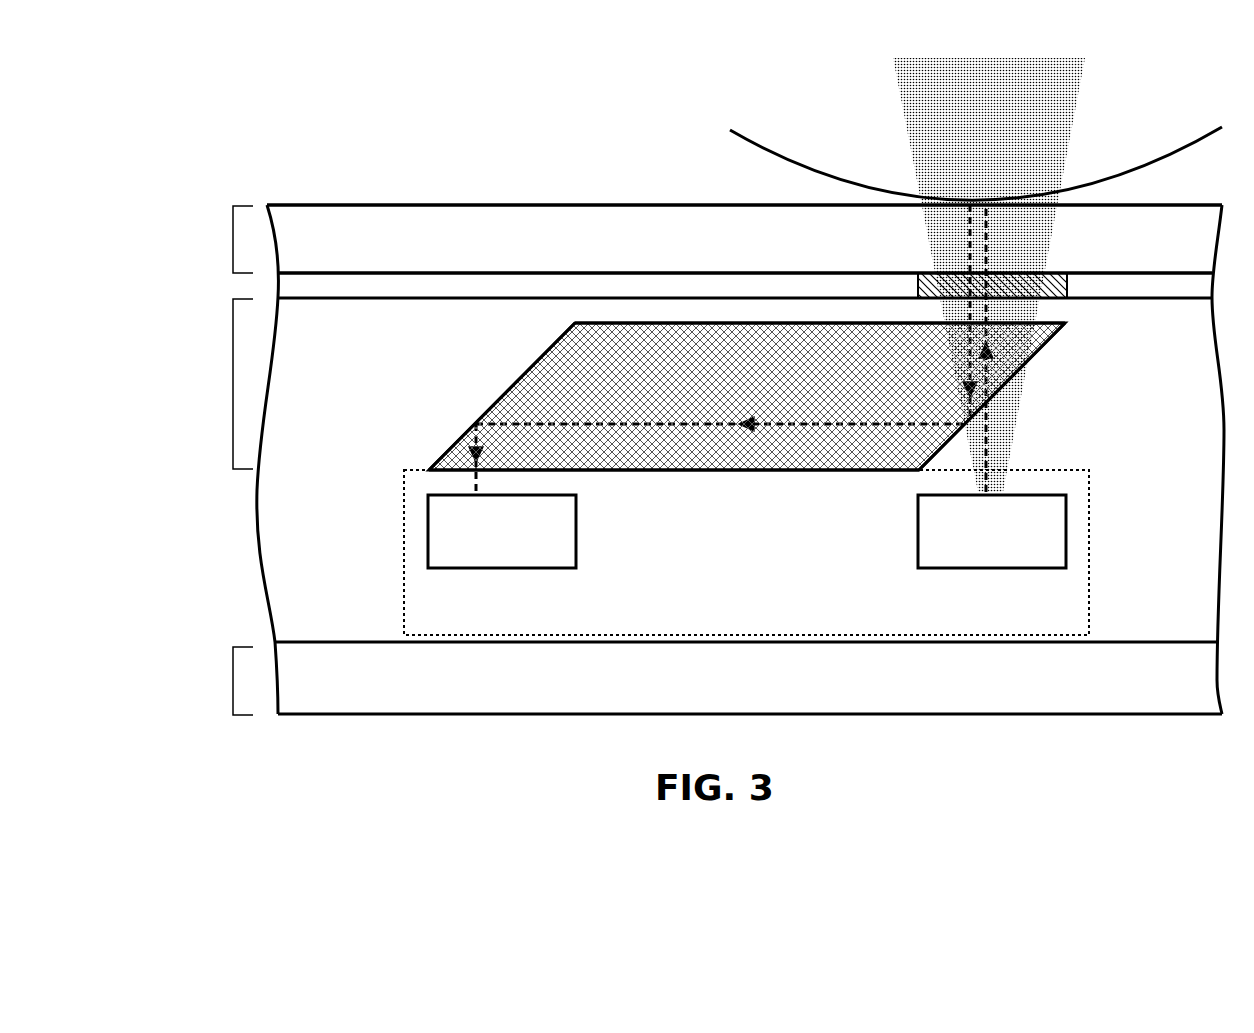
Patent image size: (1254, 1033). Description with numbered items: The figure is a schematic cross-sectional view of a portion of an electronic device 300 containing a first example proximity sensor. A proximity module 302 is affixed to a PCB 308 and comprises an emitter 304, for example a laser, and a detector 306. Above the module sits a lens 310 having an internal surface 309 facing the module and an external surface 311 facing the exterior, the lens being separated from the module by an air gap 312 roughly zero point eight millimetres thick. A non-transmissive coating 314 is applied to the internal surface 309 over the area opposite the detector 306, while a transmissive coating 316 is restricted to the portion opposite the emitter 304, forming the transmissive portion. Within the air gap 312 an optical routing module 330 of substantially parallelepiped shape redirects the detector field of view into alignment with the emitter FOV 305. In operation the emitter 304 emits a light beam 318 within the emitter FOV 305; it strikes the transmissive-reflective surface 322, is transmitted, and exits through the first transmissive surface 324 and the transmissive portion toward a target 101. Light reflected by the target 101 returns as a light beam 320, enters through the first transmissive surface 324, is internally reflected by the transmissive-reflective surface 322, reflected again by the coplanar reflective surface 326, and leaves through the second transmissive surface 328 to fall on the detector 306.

The electronic device 300 is at (348, 766).
The target 101 is at (1206, 138).
The emitter FOV 305 is at (1055, 213).
The light beam 318 is at (1000, 443).
The lens 310 is at (189, 236).
The external surface 311 is at (400, 207).
The internal surface 309 is at (400, 273).
The coating 314 is at (572, 294).
The transmissive coating 316 is at (1040, 292).
The air gap 312 is at (190, 385).
The light beam 320 is at (970, 260).
The optical routing module 330 is at (528, 347).
The first transmissive surface 324 is at (1005, 322).
The transmissive-reflective surface 322 is at (1018, 374).
The reflective surface 326 is at (505, 392).
The second transmissive surface 328 is at (487, 470).
The proximity module 302 is at (657, 610).
The detector 306 is at (484, 527).
The emitter 304 is at (974, 527).
The PCB 308 is at (190, 675).